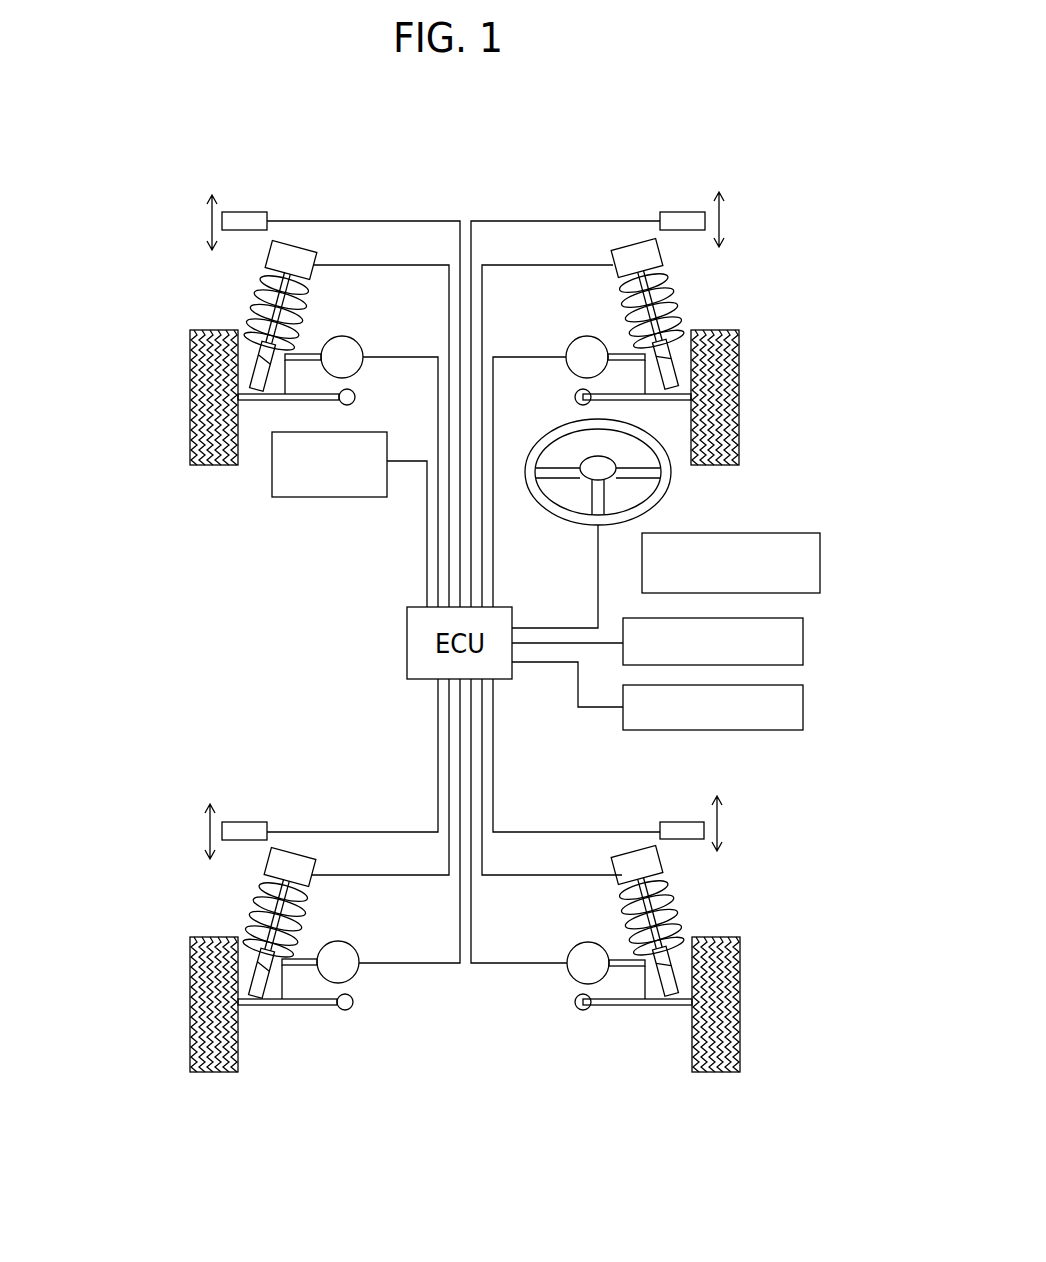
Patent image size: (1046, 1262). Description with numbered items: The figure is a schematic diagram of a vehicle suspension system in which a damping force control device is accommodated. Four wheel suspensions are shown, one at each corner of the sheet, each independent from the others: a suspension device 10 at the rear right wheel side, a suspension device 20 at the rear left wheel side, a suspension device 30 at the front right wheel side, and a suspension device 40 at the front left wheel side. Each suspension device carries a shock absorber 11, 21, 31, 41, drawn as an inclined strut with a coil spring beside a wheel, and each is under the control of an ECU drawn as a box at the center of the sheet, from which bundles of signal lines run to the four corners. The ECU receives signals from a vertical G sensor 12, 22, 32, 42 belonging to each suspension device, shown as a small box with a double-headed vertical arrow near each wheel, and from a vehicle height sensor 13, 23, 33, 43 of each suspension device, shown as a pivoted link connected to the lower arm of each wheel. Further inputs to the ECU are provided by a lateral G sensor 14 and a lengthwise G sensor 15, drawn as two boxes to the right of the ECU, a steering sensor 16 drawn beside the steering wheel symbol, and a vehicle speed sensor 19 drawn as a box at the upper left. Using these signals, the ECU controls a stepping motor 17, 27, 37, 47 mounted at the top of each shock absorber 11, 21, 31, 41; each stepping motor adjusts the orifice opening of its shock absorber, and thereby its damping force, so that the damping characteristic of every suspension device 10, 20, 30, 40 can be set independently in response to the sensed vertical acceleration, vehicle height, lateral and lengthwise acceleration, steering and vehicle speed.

The suspension device 10 is at (703, 918).
The shock absorber 11 is at (667, 983).
The vertical G sensor 12 is at (678, 822).
The vehicle height sensor 13 is at (667, 1007).
The lateral G sensor 14 is at (797, 637).
The lengthwise G sensor 15 is at (802, 705).
The steering sensor 16 is at (813, 548).
The stepping motor 17 is at (628, 872).
The vehicle speed sensor 19 is at (317, 497).
The suspension device 20 is at (235, 919).
The shock absorber 21 is at (270, 993).
The vertical G sensor 22 is at (243, 822).
The vehicle height sensor 23 is at (260, 997).
The stepping motor 27 is at (305, 873).
The suspension device 30 is at (702, 313).
The shock absorber 31 is at (663, 380).
The vertical G sensor 32 is at (677, 212).
The vehicle height sensor 33 is at (740, 450).
The stepping motor 37 is at (632, 256).
The suspension device 40 is at (235, 312).
The shock absorber 41 is at (258, 380).
The vertical G sensor 42 is at (247, 212).
The vehicle height sensor 43 is at (190, 450).
The stepping motor 47 is at (293, 260).